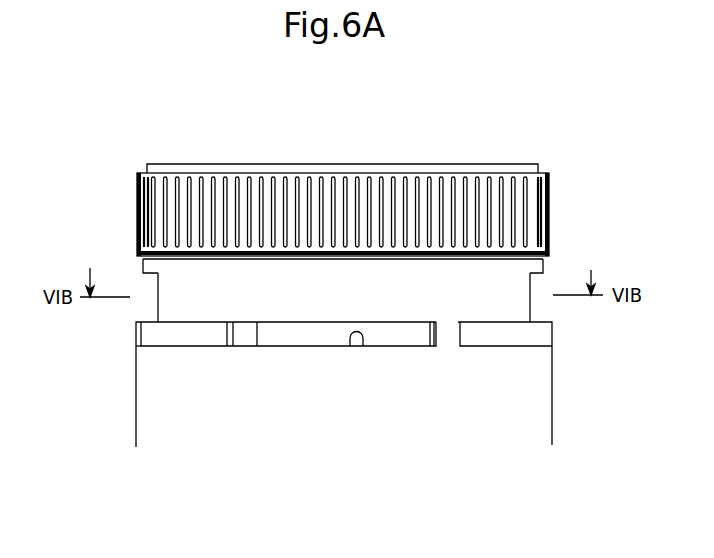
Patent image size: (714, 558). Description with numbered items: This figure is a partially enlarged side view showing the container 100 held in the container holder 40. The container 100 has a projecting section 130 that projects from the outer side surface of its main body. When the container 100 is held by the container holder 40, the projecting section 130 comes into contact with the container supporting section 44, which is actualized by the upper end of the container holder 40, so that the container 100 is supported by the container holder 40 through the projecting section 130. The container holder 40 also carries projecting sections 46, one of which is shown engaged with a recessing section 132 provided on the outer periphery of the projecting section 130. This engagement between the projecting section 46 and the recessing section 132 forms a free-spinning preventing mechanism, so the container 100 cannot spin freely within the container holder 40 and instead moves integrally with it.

The container 100 is at (568, 152).
The container holder 40 is at (542, 393).
The projecting section 46 is at (448, 336).
The container supporting section 44 is at (365, 347).
The projecting section 130 is at (412, 332).
The recessing section 132 is at (243, 333).